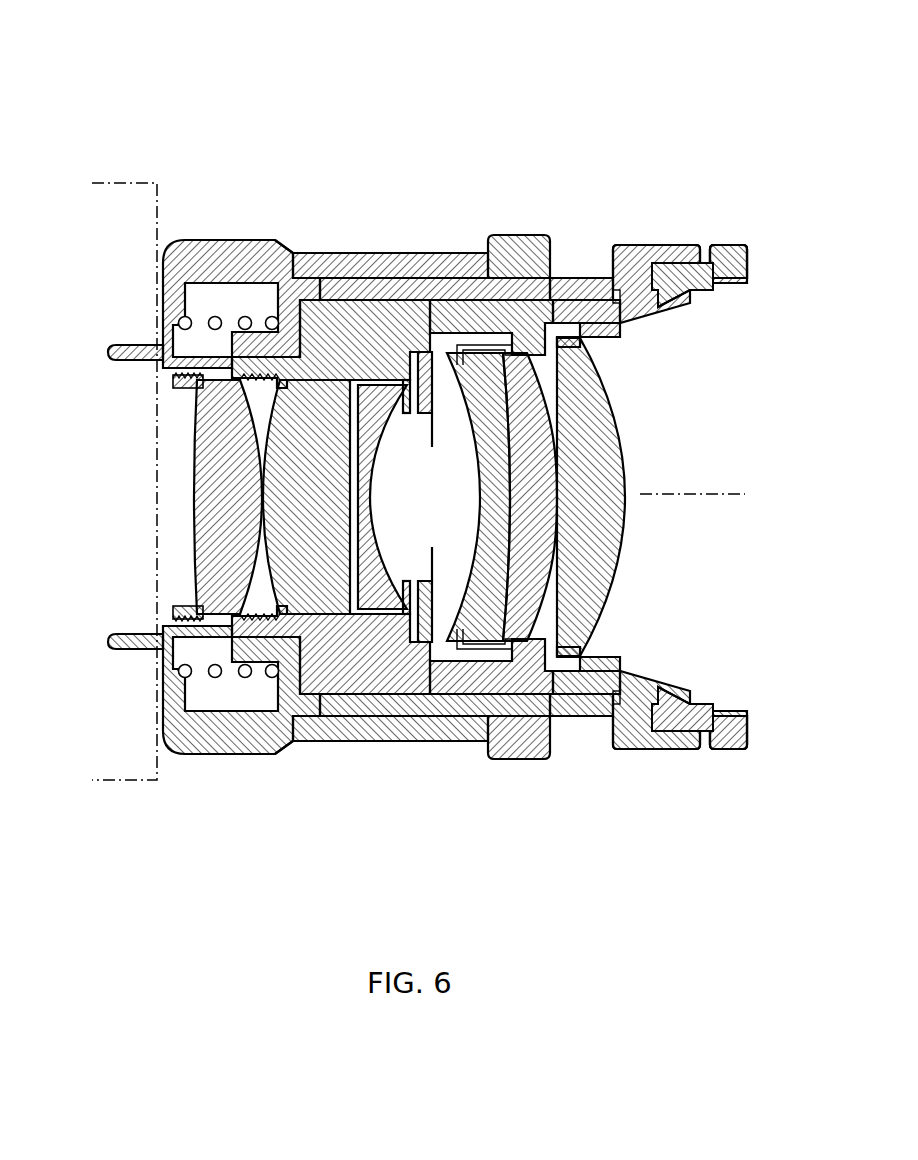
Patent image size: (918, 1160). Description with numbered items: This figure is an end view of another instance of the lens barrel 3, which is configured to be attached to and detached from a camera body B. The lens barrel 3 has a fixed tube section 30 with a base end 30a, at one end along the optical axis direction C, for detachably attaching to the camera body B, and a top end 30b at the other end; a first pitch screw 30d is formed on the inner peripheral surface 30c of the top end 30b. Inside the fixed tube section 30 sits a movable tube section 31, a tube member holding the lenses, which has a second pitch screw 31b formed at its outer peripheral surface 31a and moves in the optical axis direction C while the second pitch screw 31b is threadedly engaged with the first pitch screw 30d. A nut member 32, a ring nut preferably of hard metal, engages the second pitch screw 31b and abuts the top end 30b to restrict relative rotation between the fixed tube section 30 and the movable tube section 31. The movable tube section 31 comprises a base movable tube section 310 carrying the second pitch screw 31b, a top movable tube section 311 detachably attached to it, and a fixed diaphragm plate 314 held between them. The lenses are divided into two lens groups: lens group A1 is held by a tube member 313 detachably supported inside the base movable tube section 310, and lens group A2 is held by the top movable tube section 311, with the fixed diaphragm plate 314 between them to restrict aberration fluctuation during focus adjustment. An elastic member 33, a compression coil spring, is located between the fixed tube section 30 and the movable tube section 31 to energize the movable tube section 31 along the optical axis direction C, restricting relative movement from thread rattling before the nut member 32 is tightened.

The lens barrel 3 is at (578, 99).
The fixed tube section 30 is at (340, 252).
The base end 30a is at (133, 345).
The top end 30b is at (435, 425).
The inner peripheral surface 30c is at (290, 250).
The first pitch screw 30d is at (380, 250).
The movable tube section 31 is at (790, 172).
The outer peripheral surface 31a is at (612, 730).
The second pitch screw 31b is at (572, 275).
The nut member 32 is at (522, 235).
The elastic member 33 is at (247, 680).
The base movable tube section 310 is at (620, 247).
The top movable tube section 311 is at (738, 247).
The tube member 313 is at (163, 614).
The fixed diaphragm plate 314 is at (600, 270).
The lens group A1 is at (365, 497).
The lens group A2 is at (512, 450).
The camera body B is at (160, 212).
The optical axis direction C is at (745, 494).